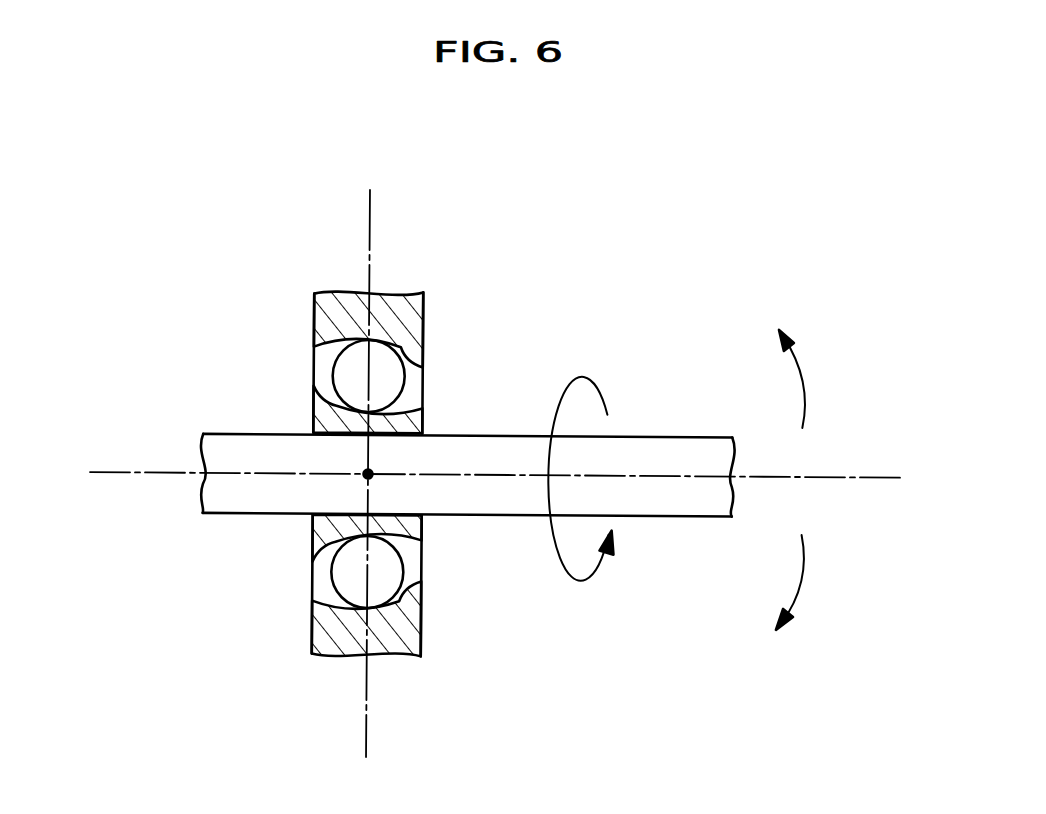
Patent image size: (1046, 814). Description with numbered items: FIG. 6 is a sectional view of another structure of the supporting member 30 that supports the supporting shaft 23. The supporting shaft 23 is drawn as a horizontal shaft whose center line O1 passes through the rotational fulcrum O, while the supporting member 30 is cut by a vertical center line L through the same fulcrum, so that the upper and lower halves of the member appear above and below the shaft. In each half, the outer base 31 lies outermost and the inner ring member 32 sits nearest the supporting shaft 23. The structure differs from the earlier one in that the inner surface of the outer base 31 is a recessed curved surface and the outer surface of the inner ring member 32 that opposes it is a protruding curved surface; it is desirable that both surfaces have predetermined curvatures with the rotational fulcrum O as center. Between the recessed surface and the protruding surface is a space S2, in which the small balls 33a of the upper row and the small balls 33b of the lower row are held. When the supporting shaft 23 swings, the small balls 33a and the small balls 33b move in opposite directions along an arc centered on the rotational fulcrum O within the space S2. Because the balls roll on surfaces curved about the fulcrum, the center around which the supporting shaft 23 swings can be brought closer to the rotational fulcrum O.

The supporting shaft 23 is at (705, 507).
The bearing 30 is at (446, 443).
The outer base 31 is at (426, 300).
The inner ring member 32 is at (424, 395).
The small balls 33a is at (424, 350).
The small balls 33b is at (387, 570).
The rotational fulcrum O is at (372, 471).
The shaft axis O1 is at (500, 477).
The bearing center line L is at (367, 235).
The space S2 is at (313, 362).